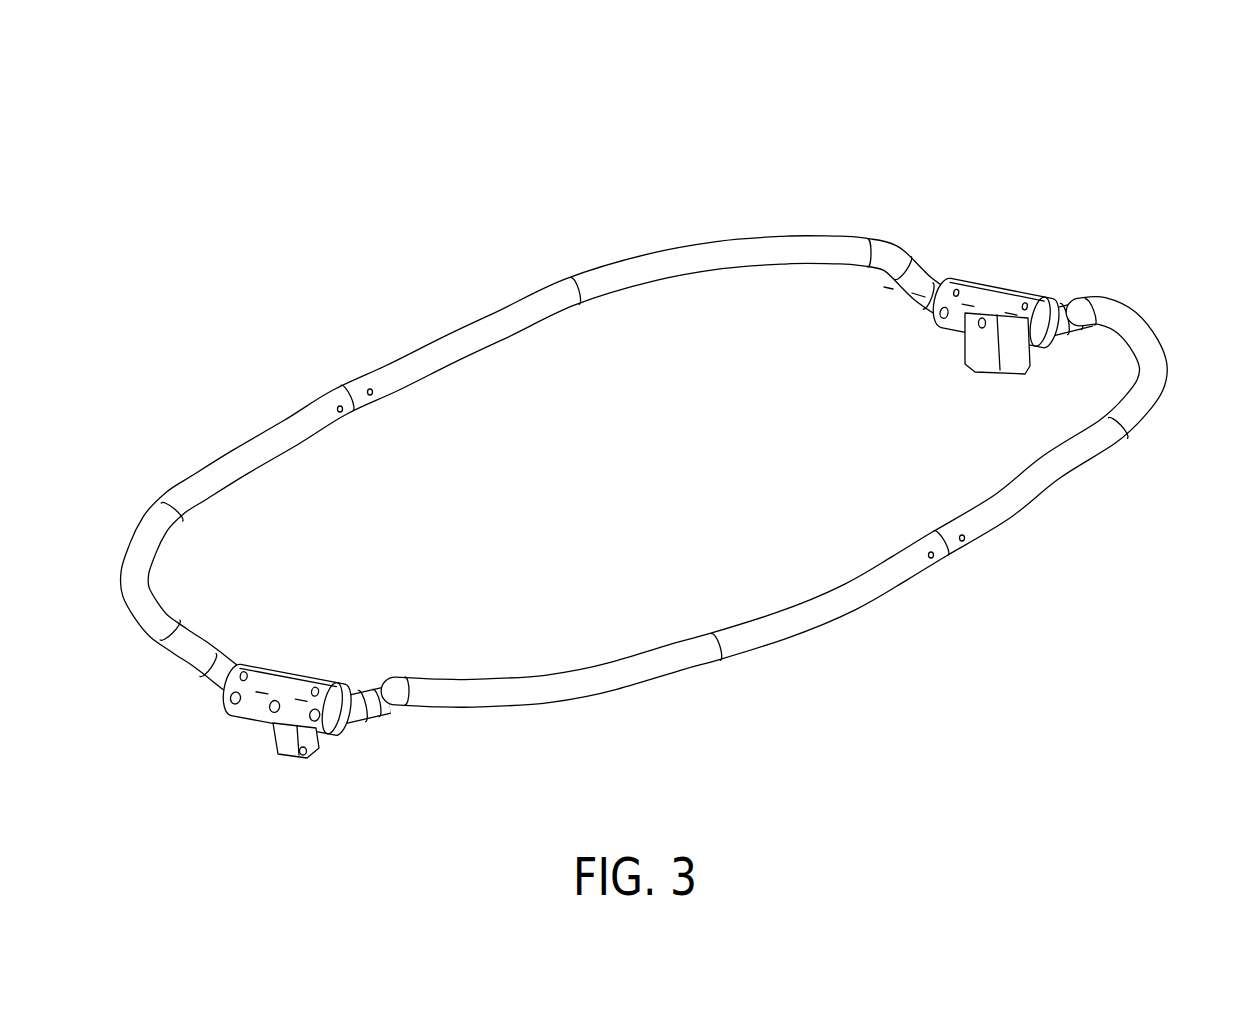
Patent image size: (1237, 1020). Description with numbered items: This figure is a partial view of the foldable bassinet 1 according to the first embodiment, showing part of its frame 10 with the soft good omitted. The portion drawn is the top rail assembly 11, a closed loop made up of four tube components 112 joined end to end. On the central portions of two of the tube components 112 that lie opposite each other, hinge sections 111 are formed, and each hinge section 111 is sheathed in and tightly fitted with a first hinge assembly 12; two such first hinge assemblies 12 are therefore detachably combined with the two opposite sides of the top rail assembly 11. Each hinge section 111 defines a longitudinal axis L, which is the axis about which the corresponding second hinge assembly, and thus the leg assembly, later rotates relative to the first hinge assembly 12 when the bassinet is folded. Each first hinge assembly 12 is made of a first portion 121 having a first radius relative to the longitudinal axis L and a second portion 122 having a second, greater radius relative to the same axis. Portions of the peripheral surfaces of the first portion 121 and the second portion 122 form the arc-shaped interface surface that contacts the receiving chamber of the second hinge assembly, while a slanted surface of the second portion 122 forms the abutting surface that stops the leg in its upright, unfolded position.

The foldable bassinet 1 is at (1163, 82).
The frame 10 is at (1048, 134).
The top rail assembly 11 is at (300, 358).
The hinge section 111 is at (1048, 310).
The tube component 112 is at (495, 315).
The first hinge assembly 12 is at (635, 581).
The first portion 121 is at (953, 327).
The second portion 122 is at (983, 356).
The longitudinal axis L is at (1122, 345).